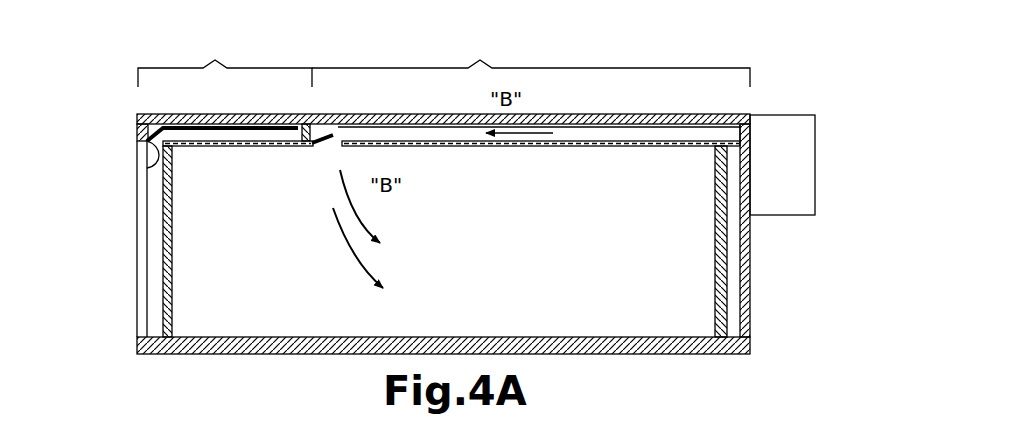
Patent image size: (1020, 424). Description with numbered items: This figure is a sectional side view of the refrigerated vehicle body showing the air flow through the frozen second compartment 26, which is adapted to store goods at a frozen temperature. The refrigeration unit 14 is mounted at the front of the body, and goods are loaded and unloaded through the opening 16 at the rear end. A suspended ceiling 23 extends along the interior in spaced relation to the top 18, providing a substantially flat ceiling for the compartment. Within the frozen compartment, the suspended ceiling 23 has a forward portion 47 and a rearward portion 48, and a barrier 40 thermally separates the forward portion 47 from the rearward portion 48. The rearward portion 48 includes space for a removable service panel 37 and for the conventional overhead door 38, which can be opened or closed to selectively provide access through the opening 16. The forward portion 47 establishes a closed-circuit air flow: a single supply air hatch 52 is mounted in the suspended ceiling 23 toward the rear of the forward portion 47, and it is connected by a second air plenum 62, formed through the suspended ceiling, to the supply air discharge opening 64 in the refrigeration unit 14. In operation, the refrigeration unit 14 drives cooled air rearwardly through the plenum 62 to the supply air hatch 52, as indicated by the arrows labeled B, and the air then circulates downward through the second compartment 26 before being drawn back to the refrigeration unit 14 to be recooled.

The refrigeration unit 14 is at (798, 187).
The opening 16 is at (110, 339).
The top 18 is at (453, 114).
The suspended ceiling 23 is at (645, 147).
The second compartment 26 is at (197, 300).
The removable service panel 37 is at (252, 148).
The overhead door 38 is at (147, 169).
The barrier 40 is at (323, 114).
The forward portion 47 is at (531, 62).
The rearward portion 48 is at (225, 63).
The supply air hatch 52 is at (330, 137).
The second air plenum 62 is at (598, 133).
The supply air discharge opening 64 is at (743, 132).